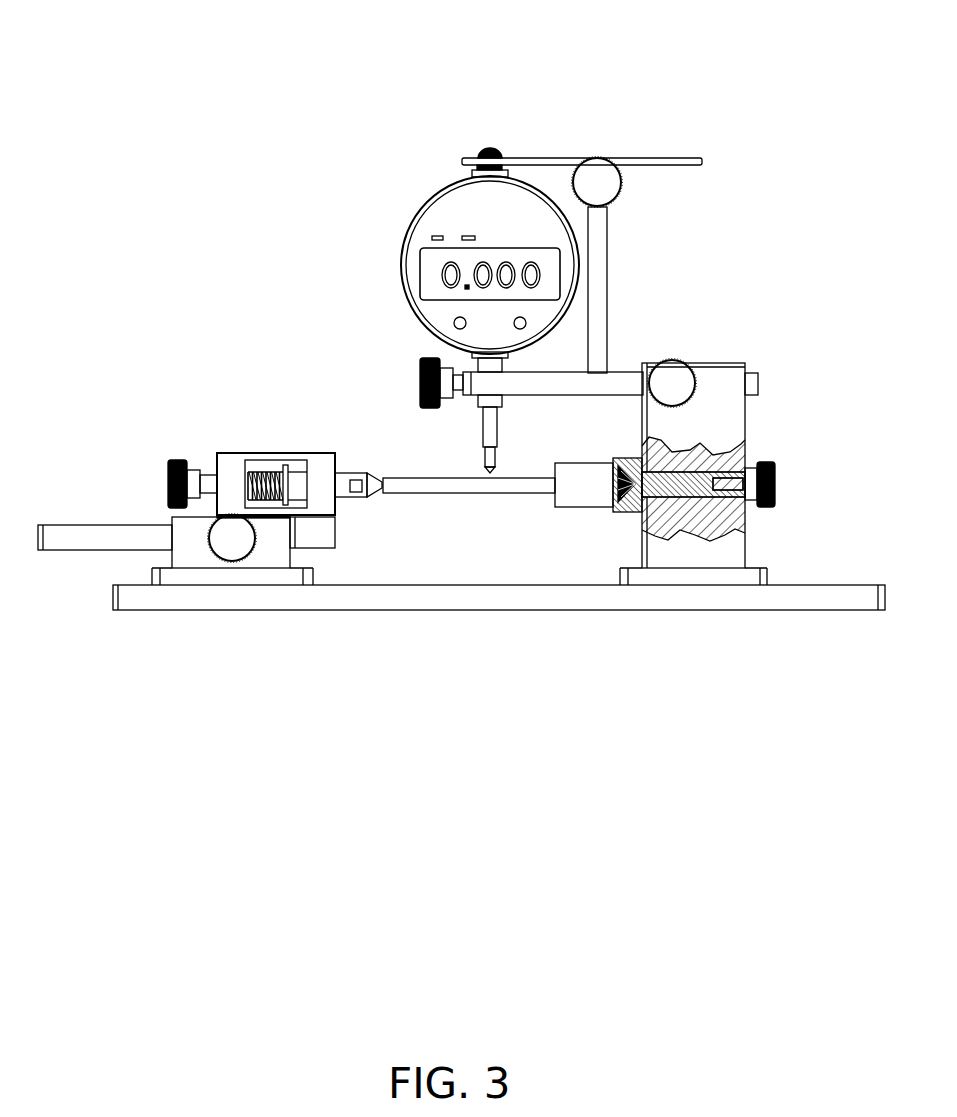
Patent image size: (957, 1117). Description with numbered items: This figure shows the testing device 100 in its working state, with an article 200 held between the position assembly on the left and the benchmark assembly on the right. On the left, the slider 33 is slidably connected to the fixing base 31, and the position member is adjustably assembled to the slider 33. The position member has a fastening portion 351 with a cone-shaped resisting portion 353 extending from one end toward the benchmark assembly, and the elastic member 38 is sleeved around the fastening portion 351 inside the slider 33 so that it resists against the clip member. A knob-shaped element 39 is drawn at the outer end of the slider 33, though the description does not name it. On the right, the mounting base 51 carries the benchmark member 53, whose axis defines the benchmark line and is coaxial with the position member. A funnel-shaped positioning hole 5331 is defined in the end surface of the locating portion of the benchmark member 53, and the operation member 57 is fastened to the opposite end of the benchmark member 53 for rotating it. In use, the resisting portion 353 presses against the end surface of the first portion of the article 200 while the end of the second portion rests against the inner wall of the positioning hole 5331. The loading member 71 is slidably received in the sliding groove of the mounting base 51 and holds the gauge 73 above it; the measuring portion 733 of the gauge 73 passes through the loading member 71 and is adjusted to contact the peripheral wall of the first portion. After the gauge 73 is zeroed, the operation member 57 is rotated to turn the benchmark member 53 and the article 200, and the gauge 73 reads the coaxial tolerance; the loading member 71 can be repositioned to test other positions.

The testing device 100 is at (550, 32).
The fixing base 31 is at (200, 570).
The slider 33 is at (232, 463).
The elastic member 38 is at (270, 472).
The adjusting knob 39 is at (177, 462).
The fastening portion 351 is at (345, 480).
The resisting portion 353 is at (373, 492).
The article 200 is at (452, 485).
The gauge 73 is at (445, 220).
The loading member 71 is at (550, 383).
The measuring portion 733 is at (488, 457).
The mounting base 51 is at (715, 560).
The benchmark member 53 is at (700, 457).
The positioning hole 5331 is at (620, 483).
The operation member 57 is at (775, 477).